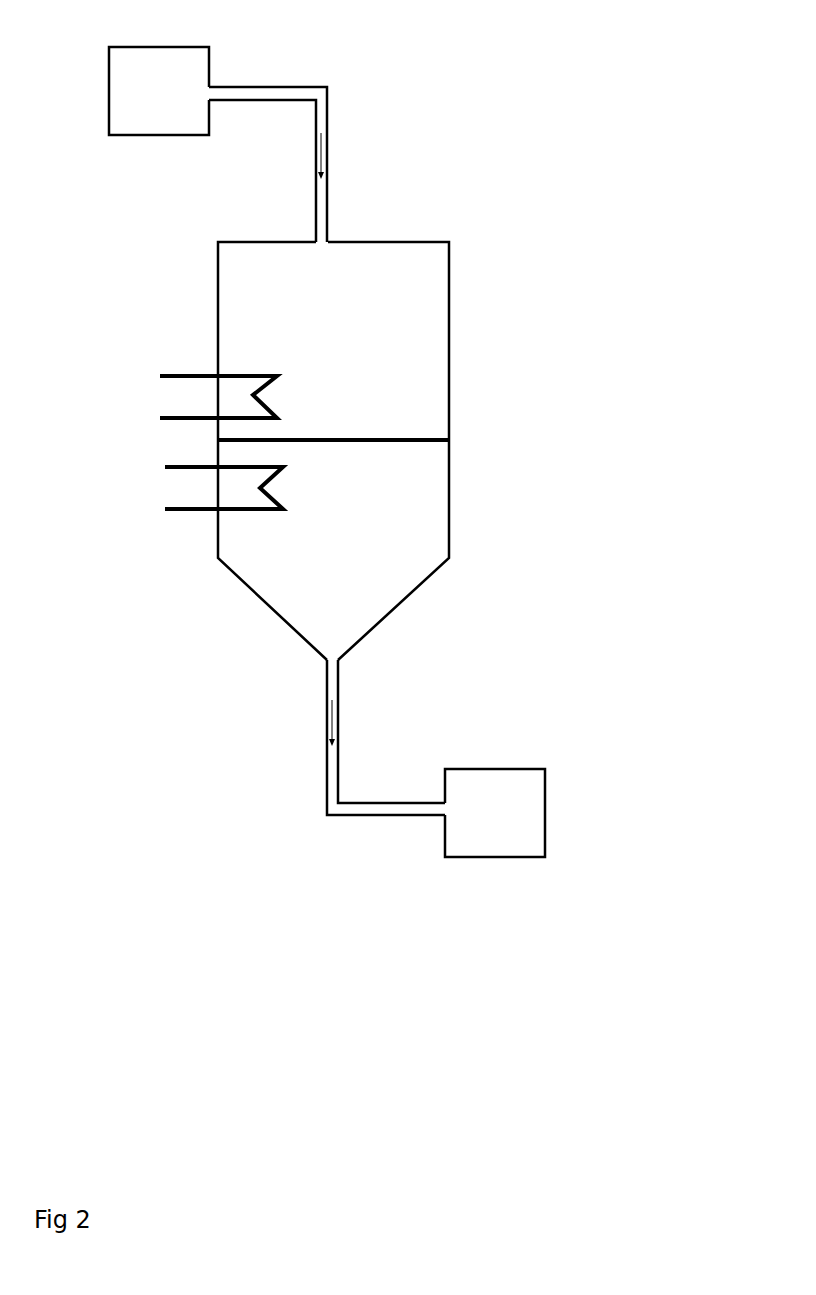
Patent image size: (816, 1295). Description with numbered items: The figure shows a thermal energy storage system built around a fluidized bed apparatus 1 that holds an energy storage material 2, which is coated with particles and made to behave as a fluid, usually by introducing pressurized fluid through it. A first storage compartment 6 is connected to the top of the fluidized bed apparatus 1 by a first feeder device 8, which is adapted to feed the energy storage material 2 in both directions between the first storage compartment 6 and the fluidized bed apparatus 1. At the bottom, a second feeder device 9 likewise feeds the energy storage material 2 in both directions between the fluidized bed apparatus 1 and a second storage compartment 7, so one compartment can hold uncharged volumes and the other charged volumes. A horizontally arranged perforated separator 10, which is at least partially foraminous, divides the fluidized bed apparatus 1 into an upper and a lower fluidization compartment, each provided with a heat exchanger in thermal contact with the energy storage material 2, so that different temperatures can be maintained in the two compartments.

The fluidized bed apparatus 1 is at (241, 305).
The energy storage material 2 is at (409, 368).
The first storage compartment 6 is at (187, 92).
The second storage compartment 7 is at (527, 797).
The first feeder device 8 is at (322, 202).
The second feeder device 9 is at (333, 760).
The perforated separator 10 is at (435, 437).